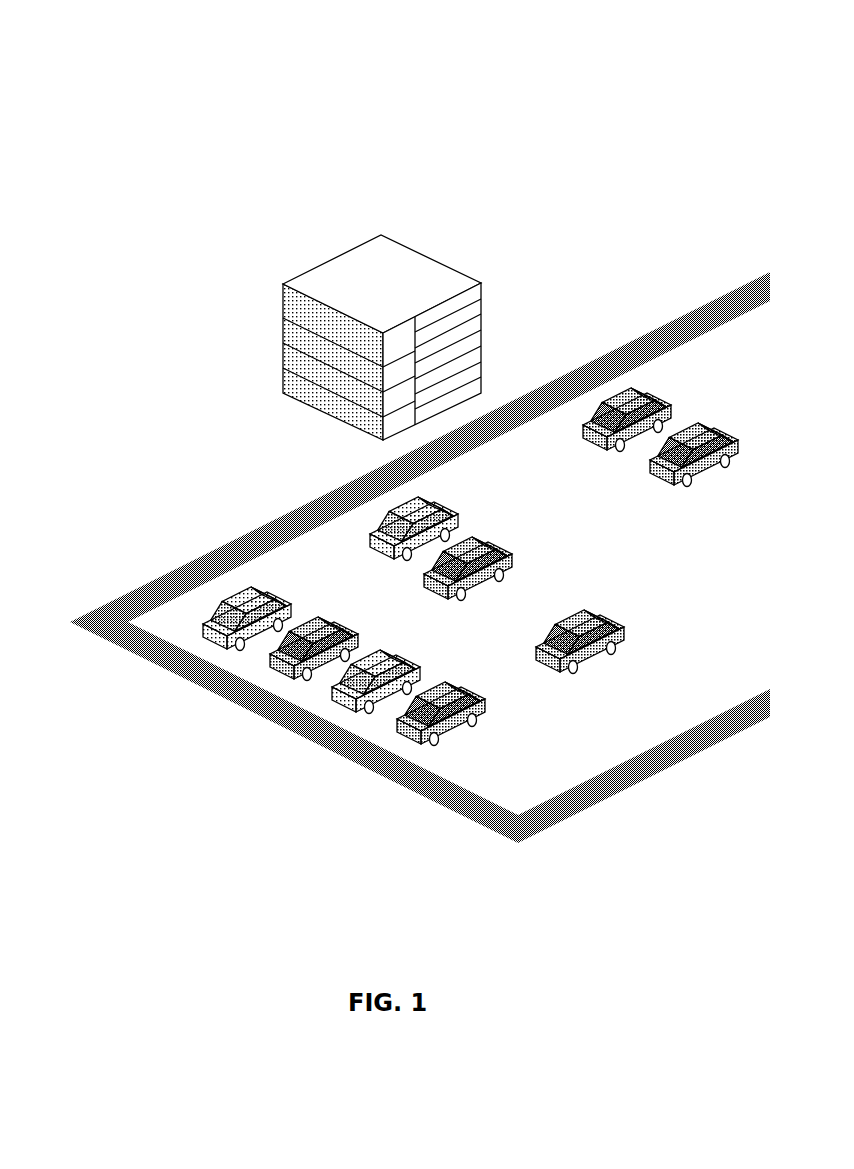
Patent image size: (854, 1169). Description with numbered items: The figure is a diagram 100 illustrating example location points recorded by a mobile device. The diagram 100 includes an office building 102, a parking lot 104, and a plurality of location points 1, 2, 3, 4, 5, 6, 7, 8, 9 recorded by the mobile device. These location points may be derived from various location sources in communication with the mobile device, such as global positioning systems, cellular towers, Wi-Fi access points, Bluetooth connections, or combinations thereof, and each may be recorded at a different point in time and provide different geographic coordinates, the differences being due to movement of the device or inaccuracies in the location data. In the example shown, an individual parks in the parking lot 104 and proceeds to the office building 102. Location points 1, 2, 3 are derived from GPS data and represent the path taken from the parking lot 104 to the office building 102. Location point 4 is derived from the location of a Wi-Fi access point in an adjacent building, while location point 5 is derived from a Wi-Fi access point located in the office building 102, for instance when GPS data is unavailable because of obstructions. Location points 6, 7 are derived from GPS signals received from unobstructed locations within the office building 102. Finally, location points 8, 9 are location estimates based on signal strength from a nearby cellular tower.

The diagram 100 is at (93, 40).
The office building 102 is at (298, 278).
The parking lot 104 is at (173, 571).
The location point 1 is at (445, 666).
The location point 2 is at (370, 579).
The location point 3 is at (352, 472).
The location point 4 is at (70, 456).
The location point 5 is at (463, 252).
The location point 6 is at (370, 227).
The location point 7 is at (407, 279).
The location point 8 is at (732, 531).
The location point 9 is at (737, 341).